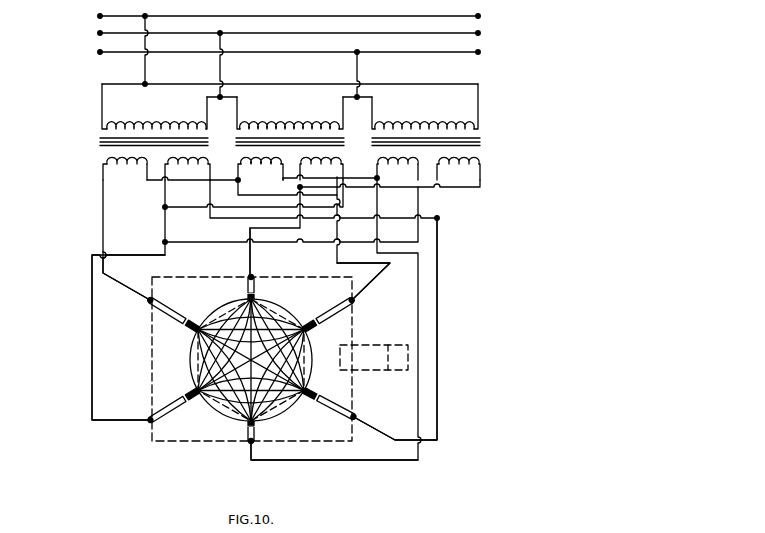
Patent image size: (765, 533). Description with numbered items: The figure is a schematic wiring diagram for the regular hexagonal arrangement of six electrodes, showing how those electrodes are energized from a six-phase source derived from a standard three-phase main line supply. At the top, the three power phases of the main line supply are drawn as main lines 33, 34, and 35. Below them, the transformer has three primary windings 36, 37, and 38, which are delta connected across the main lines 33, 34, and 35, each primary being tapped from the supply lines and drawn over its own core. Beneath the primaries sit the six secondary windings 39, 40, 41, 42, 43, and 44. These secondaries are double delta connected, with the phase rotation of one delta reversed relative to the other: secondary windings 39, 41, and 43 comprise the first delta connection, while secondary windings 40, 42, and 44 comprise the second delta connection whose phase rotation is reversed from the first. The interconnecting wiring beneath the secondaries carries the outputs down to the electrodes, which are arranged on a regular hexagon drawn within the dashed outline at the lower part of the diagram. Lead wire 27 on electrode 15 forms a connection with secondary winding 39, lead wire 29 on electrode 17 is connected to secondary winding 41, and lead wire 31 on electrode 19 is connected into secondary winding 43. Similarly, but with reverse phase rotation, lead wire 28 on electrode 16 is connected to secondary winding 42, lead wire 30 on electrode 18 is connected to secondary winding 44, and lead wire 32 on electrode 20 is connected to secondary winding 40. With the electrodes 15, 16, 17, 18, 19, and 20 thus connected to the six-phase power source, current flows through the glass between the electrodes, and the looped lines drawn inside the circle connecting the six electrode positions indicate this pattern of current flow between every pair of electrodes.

The electrode 15 is at (166, 292).
The electrode 16 is at (257, 289).
The electrode 17 is at (347, 326).
The electrode 18 is at (344, 416).
The electrode 19 is at (257, 431).
The electrode 20 is at (173, 415).
The lead wire 27 is at (110, 269).
The lead wire 28 is at (252, 251).
The lead wire 29 is at (385, 281).
The lead wire 30 is at (387, 422).
The lead wire 31 is at (246, 462).
The lead wire 32 is at (110, 408).
The main line 33 is at (99, 16).
The main line 34 is at (99, 33).
The main line 35 is at (99, 52).
The primary winding 36 is at (175, 127).
The primary winding 37 is at (307, 127).
The primary winding 38 is at (441, 125).
The secondary winding 39 is at (133, 176).
The secondary winding 40 is at (197, 170).
The secondary winding 41 is at (265, 170).
The secondary winding 42 is at (330, 168).
The secondary winding 43 is at (405, 168).
The secondary winding 44 is at (465, 168).